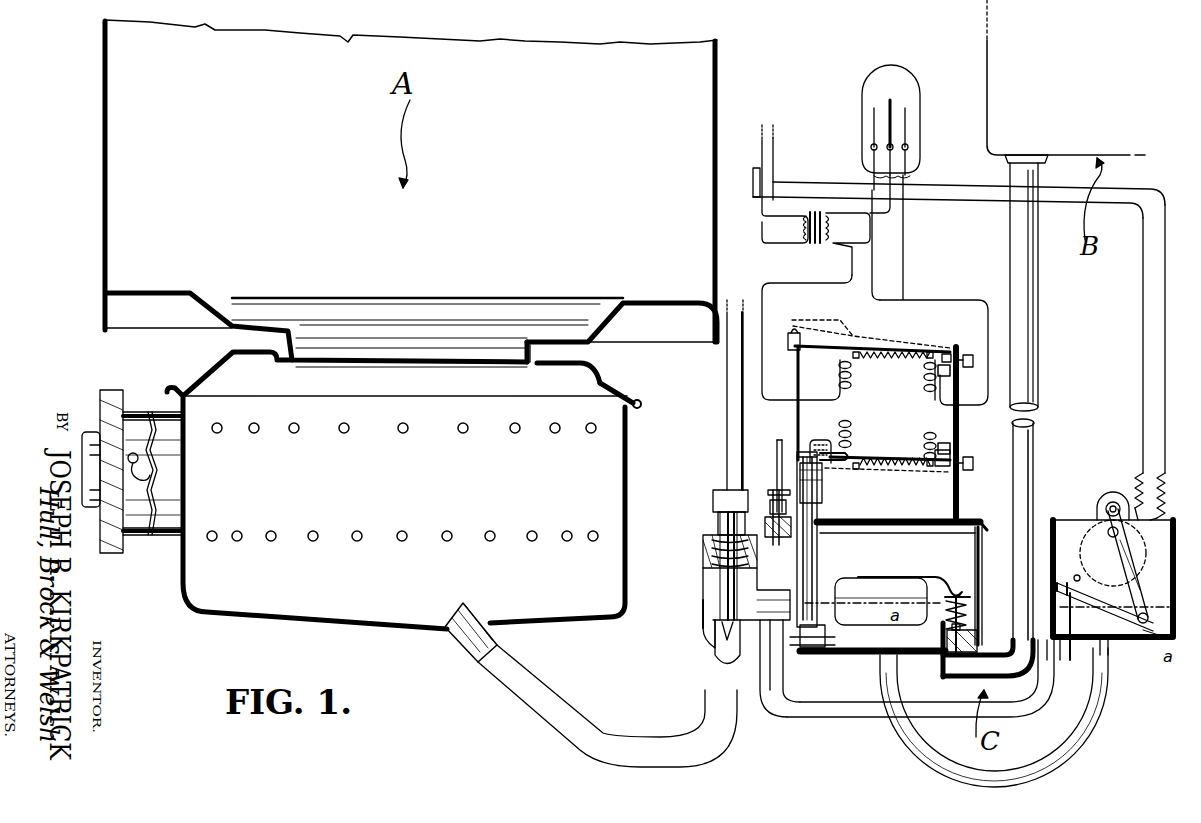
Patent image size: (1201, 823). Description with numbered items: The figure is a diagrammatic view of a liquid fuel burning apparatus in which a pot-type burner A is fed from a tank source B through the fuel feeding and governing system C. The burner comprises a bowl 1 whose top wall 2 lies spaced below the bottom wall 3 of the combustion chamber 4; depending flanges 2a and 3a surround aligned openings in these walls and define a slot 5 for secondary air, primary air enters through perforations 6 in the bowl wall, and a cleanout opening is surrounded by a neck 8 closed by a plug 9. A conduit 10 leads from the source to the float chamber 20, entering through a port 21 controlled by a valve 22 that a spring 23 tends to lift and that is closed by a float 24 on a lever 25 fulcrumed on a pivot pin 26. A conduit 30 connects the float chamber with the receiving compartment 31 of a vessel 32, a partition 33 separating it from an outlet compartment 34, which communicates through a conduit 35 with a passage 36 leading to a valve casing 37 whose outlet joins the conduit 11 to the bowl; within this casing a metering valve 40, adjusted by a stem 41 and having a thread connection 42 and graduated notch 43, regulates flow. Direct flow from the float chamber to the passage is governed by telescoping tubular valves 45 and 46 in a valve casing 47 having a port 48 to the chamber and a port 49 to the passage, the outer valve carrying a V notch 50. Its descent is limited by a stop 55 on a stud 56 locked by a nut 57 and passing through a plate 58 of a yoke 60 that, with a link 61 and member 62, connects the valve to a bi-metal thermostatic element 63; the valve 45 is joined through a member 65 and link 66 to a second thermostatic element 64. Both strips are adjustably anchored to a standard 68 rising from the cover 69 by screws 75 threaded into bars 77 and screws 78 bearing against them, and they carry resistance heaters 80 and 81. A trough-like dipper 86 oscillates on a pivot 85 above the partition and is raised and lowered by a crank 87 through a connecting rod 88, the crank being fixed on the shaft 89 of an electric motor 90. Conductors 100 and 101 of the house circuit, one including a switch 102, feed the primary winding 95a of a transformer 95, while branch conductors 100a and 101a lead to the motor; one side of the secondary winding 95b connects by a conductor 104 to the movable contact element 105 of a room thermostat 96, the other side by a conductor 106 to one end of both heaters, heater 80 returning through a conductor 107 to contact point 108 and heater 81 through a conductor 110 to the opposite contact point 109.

The bowl 1 is at (628, 495).
The top wall 2 is at (612, 391).
The depending flange 2a is at (540, 367).
The bottom wall 3 is at (640, 303).
The depending flange 3a is at (525, 362).
The combustion chamber 4 is at (713, 192).
The slot 5 is at (533, 366).
The perforations 6 is at (566, 531).
The neck 8 is at (168, 532).
The plug 9 is at (143, 412).
The conduit 10 is at (1040, 340).
The conduit 11 is at (505, 672).
The float chamber 20 is at (981, 582).
The port 21 is at (947, 640).
The valve 22 is at (977, 640).
The spring 23 is at (964, 605).
The float 24 is at (881, 601).
The lever 25 is at (922, 577).
The pivot pin 26 is at (945, 583).
The conduit 30 is at (1092, 721).
The receiving compartment 31 is at (1125, 646).
The vessel 32 is at (1081, 540).
The partition 33 is at (1074, 630).
The outlet compartment 34 is at (1040, 662).
The conduit 35 is at (856, 706).
The passage 36 is at (768, 612).
The valve casing 37 is at (708, 618).
The metering valve 40 is at (720, 593).
The stem 41 is at (725, 452).
The thread connection 42 is at (710, 548).
The graduated notch 43 is at (712, 652).
The inner tubular valve 45 is at (812, 548).
The outer tubular valve 46 is at (816, 563).
The valve casing 47 is at (822, 630).
The port 48 is at (806, 648).
The port 49 is at (772, 660).
The V notch 50 is at (833, 603).
The stop 55 is at (773, 500).
The stud 56 is at (776, 452).
The nut 57 is at (728, 510).
The plate 58 is at (800, 503).
The yoke 60 is at (822, 485).
The link 61 is at (800, 403).
The member 62 is at (792, 344).
The thermostatic element 63 is at (873, 346).
The thermostatic element 64 is at (870, 466).
The member 65 is at (821, 439).
The link 66 is at (832, 455).
The standard 68 is at (960, 483).
The cover 69 is at (916, 519).
The screws 75 is at (951, 372).
The bars 77 is at (946, 354).
The screws 78 is at (969, 354).
The electric heater 80 is at (887, 360).
The electric heater 81 is at (905, 458).
The pivot 85 is at (1079, 585).
The dipper 86 is at (1134, 591).
The crank 87 is at (1108, 529).
The connecting rod 88 is at (1126, 568).
The shaft 89 is at (1112, 502).
The electric motor 90 is at (1148, 520).
The transformer 95 is at (816, 250).
The primary winding 95a is at (785, 228).
The secondary winding 95b is at (848, 244).
The room thermostat 96 is at (895, 93).
The conductor 100 is at (762, 147).
The conductor 100a is at (1143, 306).
The conductor 101 is at (776, 165).
The conductor 101a is at (1163, 370).
The switch 102 is at (753, 186).
The conductor 104 is at (886, 214).
The movable contact element 105 is at (893, 133).
The conductor 106 is at (764, 322).
The conductor 107 is at (905, 275).
The contact point 108 is at (906, 112).
The contact point 109 is at (873, 110).
The conductor 110 is at (875, 252).